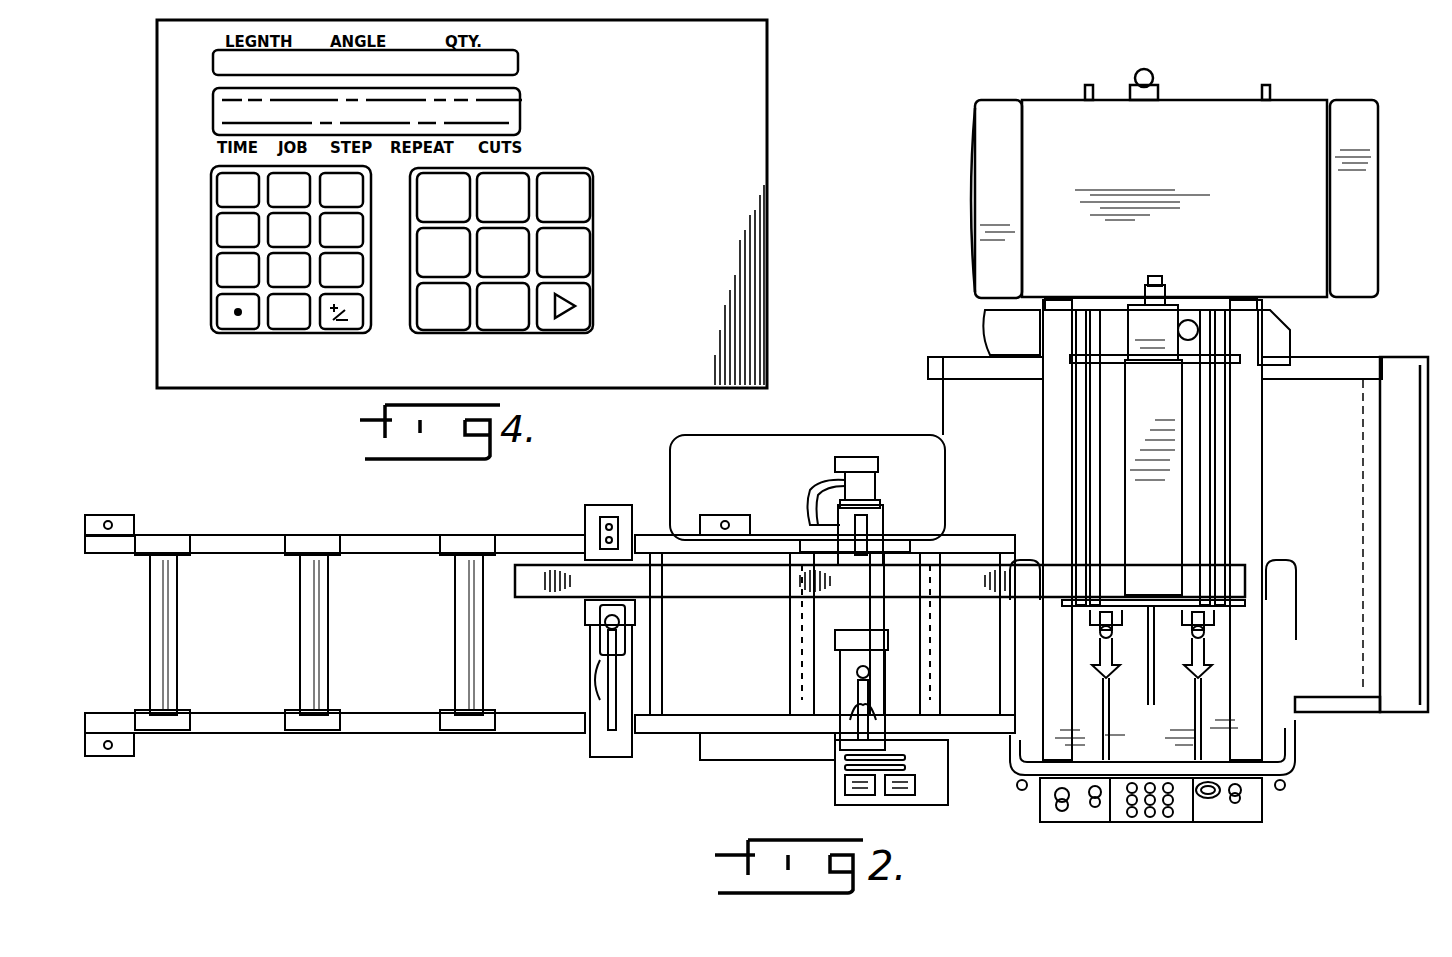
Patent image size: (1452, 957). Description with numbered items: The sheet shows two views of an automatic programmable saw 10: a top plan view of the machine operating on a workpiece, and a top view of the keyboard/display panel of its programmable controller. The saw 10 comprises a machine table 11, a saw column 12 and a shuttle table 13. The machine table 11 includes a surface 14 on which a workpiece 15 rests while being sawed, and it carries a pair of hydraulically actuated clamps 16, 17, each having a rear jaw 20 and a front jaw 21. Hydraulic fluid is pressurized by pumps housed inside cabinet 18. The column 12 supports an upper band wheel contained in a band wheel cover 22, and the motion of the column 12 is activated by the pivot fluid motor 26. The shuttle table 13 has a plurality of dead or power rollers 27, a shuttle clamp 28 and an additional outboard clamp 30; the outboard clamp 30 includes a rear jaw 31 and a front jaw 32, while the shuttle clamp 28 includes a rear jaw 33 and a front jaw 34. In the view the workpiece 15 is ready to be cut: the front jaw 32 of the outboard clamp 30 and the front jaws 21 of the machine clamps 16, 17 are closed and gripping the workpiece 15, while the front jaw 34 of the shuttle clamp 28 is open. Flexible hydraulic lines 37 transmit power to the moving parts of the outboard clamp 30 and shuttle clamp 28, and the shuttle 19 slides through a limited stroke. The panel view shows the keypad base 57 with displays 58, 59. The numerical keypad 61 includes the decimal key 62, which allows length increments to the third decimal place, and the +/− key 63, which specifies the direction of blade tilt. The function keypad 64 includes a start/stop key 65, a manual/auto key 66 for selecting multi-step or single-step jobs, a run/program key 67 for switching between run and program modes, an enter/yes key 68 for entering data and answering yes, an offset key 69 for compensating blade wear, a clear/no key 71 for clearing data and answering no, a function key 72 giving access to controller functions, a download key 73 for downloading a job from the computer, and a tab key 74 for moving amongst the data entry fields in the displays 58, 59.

In FIG. 2, the saw 10 is at (793, 382).
In FIG. 2, the machine table 11 is at (1280, 594).
In FIG. 2, the saw column 12 is at (1170, 320).
In FIG. 2, the shuttle table 13 is at (335, 649).
In FIG. 2, the surface 14 is at (1242, 590).
In FIG. 2, the workpiece 15 is at (765, 590).
In FIG. 2, the clamp 16 is at (1210, 630).
In FIG. 2, the clamp 17 is at (1112, 645).
In FIG. 2, the cabinet 18 is at (1305, 112).
In FIG. 2, the shuttle 19 is at (857, 453).
In FIG. 2, the rear jaw 20 is at (1190, 560).
In FIG. 2, the front jaw 21 is at (1150, 630).
In FIG. 2, the band wheel cover 22 is at (1145, 370).
In FIG. 2, the pivot fluid motor 26 is at (1190, 315).
In FIG. 2, the rollers 27 is at (165, 645).
In FIG. 2, the shuttle clamp 28 is at (862, 455).
In FIG. 2, the outboard clamp 30 is at (608, 504).
In FIG. 2, the rear jaw 31 is at (600, 540).
In FIG. 2, the front jaw 32 is at (590, 600).
In FIG. 2, the rear jaw 33 is at (880, 540).
In FIG. 2, the front jaw 34 is at (838, 640).
In FIG. 2, the flexible hydraulic lines 37 is at (812, 490).
In FIG. 4, the keypad base 57 is at (768, 161).
In FIG. 2, the keypad base 57 is at (834, 787).
In FIG. 4, the display 58 is at (520, 62).
In FIG. 4, the display 59 is at (522, 100).
In FIG. 4, the numerical keypad 61 is at (211, 258).
In FIG. 4, the decimal key 62 is at (238, 330).
In FIG. 4, the +/− key 63 is at (343, 330).
In FIG. 4, the function keypad 64 is at (514, 257).
In FIG. 4, the start/stop key 65 is at (418, 196).
In FIG. 4, the manual/auto key 66 is at (515, 176).
In FIG. 4, the run/program key 67 is at (580, 182).
In FIG. 4, the enter/yes key 68 is at (418, 257).
In FIG. 4, the offset key 69 is at (522, 268).
In FIG. 4, the clear/no key 71 is at (578, 258).
In FIG. 4, the function key 72 is at (445, 330).
In FIG. 4, the download key 73 is at (510, 330).
In FIG. 4, the tab key 74 is at (562, 330).